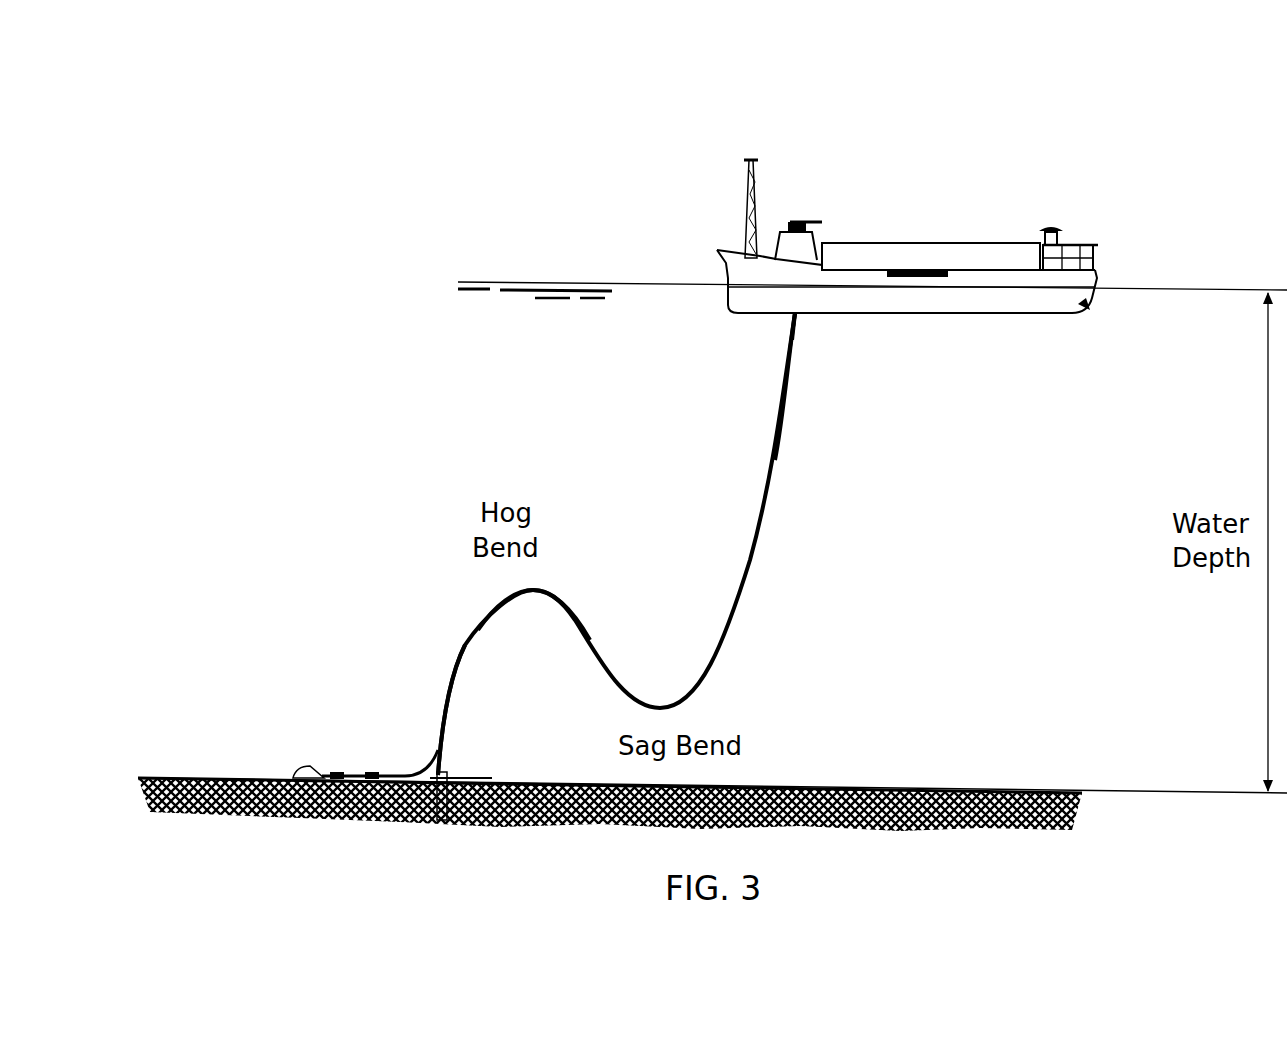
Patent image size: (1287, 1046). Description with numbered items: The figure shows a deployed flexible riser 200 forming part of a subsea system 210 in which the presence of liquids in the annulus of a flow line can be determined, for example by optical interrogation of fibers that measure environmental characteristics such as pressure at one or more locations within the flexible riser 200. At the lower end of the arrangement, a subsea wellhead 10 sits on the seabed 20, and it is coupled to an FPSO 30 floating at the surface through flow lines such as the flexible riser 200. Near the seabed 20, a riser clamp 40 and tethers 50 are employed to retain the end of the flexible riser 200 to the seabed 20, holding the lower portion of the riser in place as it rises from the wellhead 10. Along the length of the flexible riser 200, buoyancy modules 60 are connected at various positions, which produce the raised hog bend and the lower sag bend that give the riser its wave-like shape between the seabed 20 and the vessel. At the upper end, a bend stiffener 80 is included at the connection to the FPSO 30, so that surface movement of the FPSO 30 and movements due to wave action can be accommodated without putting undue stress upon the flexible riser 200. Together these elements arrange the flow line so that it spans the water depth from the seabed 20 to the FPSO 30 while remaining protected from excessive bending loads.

The subsea system 210 is at (380, 132).
The subsea wellhead 10 is at (295, 775).
The seabed 20 is at (980, 792).
The FPSO 30 is at (720, 263).
The riser clamp 40 is at (438, 723).
The tethers 50 is at (440, 753).
The buoyancy modules 60 is at (555, 592).
The bend stiffener 80 is at (797, 322).
The flexible riser 200 is at (772, 487).